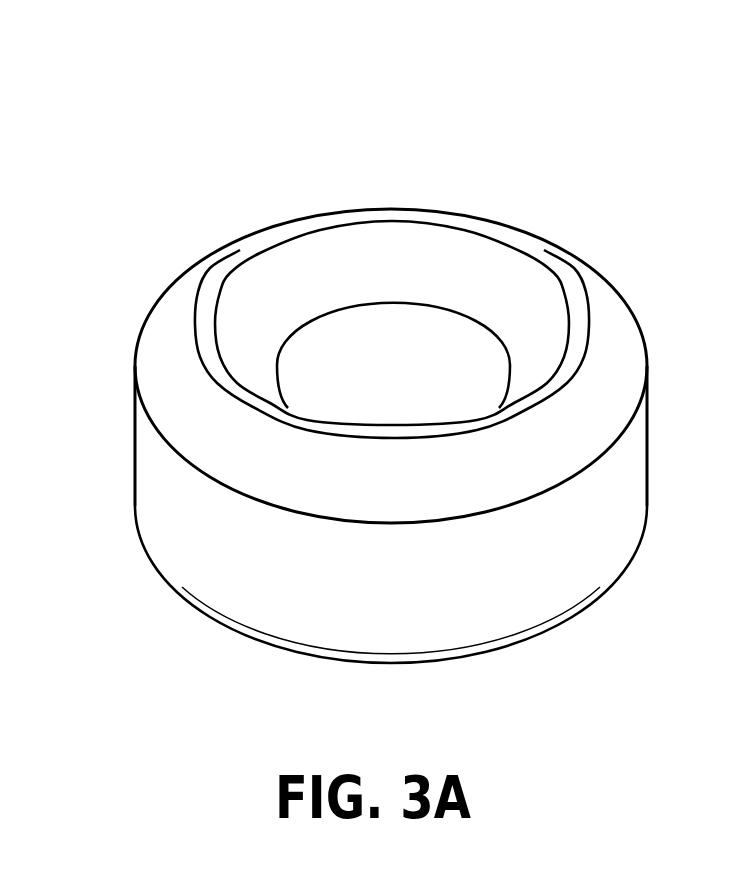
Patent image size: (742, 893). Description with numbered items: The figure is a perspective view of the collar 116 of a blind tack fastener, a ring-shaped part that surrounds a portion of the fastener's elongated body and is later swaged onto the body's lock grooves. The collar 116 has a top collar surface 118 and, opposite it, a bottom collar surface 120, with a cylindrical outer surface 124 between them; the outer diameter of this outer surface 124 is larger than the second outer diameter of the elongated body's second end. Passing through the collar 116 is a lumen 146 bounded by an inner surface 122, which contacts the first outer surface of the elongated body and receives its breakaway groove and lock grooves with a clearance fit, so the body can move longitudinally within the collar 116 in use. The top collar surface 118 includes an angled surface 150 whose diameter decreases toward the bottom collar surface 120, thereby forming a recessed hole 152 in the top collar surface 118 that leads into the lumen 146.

The collar 116 is at (100, 199).
The top collar surface 118 is at (495, 214).
The bottom collar surface 120 is at (254, 641).
The inner surface 122 is at (294, 327).
The outer surface 124 is at (602, 521).
The lumen 146 is at (391, 352).
The angled surface 150 is at (512, 296).
The recessed hole 152 is at (477, 362).